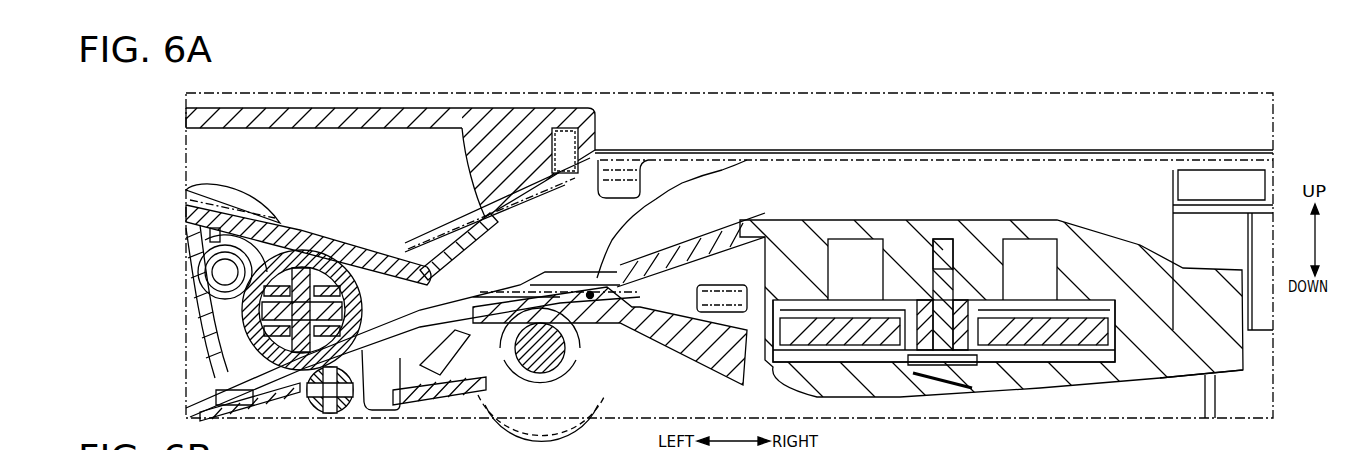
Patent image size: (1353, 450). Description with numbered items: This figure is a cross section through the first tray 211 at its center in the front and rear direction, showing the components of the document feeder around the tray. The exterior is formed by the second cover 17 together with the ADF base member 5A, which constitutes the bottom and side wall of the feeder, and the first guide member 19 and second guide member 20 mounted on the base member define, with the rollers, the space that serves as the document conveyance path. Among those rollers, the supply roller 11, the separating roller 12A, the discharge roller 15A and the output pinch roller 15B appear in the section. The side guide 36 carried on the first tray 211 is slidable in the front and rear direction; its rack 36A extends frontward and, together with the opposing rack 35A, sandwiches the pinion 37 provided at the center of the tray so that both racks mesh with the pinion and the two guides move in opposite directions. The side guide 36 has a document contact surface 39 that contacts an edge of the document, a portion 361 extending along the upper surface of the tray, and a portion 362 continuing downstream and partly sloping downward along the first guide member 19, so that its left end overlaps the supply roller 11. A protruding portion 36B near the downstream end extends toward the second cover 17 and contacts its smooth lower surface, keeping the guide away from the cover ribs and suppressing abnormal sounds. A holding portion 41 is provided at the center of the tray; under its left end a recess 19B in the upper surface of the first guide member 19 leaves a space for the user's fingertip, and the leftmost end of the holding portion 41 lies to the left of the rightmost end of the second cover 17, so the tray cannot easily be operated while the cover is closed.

The ADF base member 5A is at (520, 405).
The supply roller 11 is at (305, 270).
The separating roller 12A is at (190, 372).
The discharge roller 15A is at (568, 360).
The output pinch roller 15B is at (612, 415).
The second cover 17 is at (365, 118).
The first guide member 19 is at (668, 335).
The recess 19B is at (562, 285).
The second guide member 20 is at (445, 400).
The rack 35A is at (833, 325).
The side guide 36 is at (1145, 190).
The rack 36A is at (1077, 328).
The protruding portion 36B is at (597, 162).
The pinion 37 is at (997, 345).
The document contact surface 39 is at (738, 215).
The holding portion 41 is at (592, 268).
The first tray 211 is at (1190, 362).
The portion of side guide 361 is at (885, 215).
The portion of side guide 362 is at (429, 233).